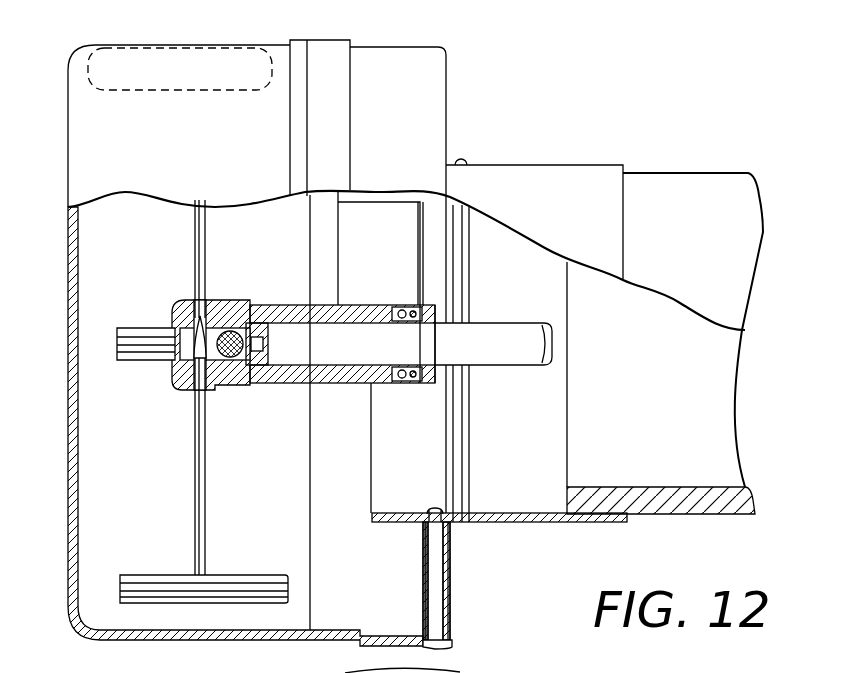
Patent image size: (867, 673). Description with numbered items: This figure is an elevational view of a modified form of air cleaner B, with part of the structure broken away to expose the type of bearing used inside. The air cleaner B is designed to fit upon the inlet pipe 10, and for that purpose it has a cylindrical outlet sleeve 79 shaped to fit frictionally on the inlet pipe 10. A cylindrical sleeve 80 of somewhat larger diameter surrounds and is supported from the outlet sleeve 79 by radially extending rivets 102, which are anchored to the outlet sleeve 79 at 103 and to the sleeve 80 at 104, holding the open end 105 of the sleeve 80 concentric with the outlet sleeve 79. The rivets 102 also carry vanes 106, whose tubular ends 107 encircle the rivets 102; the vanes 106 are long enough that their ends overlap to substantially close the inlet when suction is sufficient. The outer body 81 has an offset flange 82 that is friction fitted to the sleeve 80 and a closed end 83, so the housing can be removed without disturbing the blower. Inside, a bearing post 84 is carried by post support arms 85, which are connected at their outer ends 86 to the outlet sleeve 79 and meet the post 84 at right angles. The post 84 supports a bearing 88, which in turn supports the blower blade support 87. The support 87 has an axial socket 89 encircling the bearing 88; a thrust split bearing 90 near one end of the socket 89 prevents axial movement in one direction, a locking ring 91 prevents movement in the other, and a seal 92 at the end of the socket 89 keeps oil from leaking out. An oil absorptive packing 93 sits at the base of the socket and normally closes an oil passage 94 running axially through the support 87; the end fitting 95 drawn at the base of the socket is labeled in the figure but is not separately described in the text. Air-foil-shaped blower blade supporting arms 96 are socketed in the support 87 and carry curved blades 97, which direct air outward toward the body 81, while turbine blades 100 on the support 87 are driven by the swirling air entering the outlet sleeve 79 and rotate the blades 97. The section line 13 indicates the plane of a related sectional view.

The inlet pipe 10 is at (702, 203).
The section line of FIG. 13 is at (140, 13).
The air cleaner B is at (82, 101).
The outlet sleeve 79 is at (553, 195).
The cylindrical sleeve 80 is at (412, 108).
The body 81 is at (214, 161).
The offset flange 82 is at (323, 62).
The closed end 83 is at (72, 269).
The bearing post 84 is at (488, 330).
The post support arms 85 is at (526, 335).
The outer ends of support arms 86 is at (461, 521).
The blower blade support 87 is at (323, 386).
The bearing 88 is at (344, 406).
The axial socket 89 is at (342, 280).
The thrust split bearing 90 is at (262, 382).
The locking ring 91 is at (397, 311).
The seal 92 is at (397, 384).
The oil absorptive packing 93 is at (243, 318).
The oil passage 94 is at (212, 333).
The valve fitting 95 is at (183, 300).
The blower blade supporting arms 96 is at (196, 233).
The blades 97 is at (142, 358).
The turbine blades 100 is at (388, 222).
The rivets 102 is at (433, 567).
The rivet anchorage to sleeve 79 103 is at (437, 484).
The rivet anchorage to sleeve 80 104 is at (432, 641).
The open end of sleeve 80 105 is at (449, 595).
The vanes 106 is at (423, 540).
The tubular ends 107 is at (425, 575).